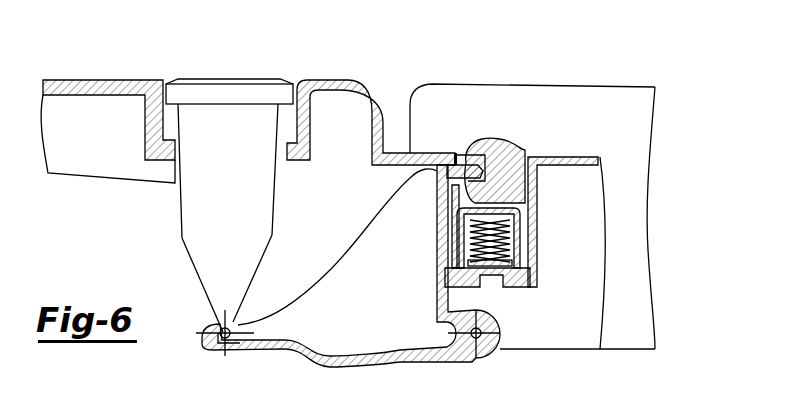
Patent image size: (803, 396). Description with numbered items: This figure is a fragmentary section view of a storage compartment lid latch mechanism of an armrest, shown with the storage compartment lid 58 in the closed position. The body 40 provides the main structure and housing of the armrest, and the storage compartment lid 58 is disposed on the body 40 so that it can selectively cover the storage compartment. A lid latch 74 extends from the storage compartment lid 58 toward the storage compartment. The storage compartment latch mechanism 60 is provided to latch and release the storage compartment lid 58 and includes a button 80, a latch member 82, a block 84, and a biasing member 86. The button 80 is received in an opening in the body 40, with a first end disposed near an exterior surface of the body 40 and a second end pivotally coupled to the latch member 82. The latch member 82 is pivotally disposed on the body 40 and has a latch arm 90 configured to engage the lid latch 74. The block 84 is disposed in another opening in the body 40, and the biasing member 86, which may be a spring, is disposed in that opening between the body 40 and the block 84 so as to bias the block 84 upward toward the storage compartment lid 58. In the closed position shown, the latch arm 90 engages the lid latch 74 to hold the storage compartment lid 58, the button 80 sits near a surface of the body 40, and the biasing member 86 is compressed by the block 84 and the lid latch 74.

The body 40 is at (108, 80).
The storage compartment lid 58 is at (586, 125).
The storage compartment latch mechanism 60 is at (158, 240).
The lid latch 74 is at (445, 183).
The button 80 is at (239, 90).
The latch member 82 is at (392, 301).
The block 84 is at (516, 232).
The biasing member 86 is at (507, 266).
The latch arm 90 is at (466, 168).